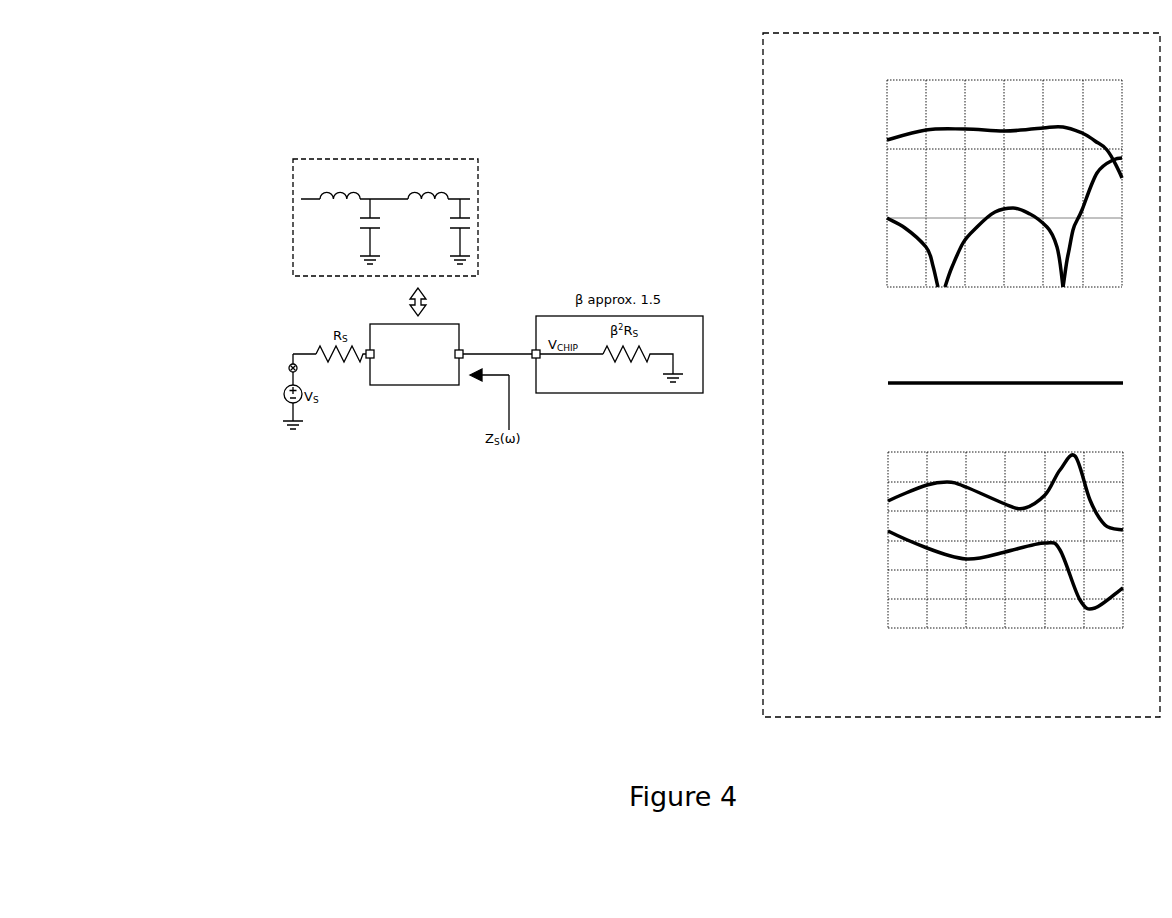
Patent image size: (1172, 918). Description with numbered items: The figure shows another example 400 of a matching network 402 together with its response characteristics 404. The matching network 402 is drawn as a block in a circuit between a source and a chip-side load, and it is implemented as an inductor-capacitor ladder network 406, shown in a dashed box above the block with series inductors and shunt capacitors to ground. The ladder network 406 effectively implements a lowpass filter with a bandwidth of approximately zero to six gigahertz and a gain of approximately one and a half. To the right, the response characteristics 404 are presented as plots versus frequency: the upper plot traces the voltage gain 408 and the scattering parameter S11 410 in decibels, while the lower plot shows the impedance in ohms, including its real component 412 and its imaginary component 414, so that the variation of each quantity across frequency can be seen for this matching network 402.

The example of matching network and response 400 is at (82, 46).
The matching network 402 is at (382, 386).
The response characteristics 404 is at (797, 58).
The inductor-capacitor ladder network 406 is at (294, 209).
The voltage gain 408 is at (1008, 136).
The scattering parameter S11 410 is at (975, 230).
The real component 412 is at (968, 489).
The imaginary component 414 is at (1055, 548).